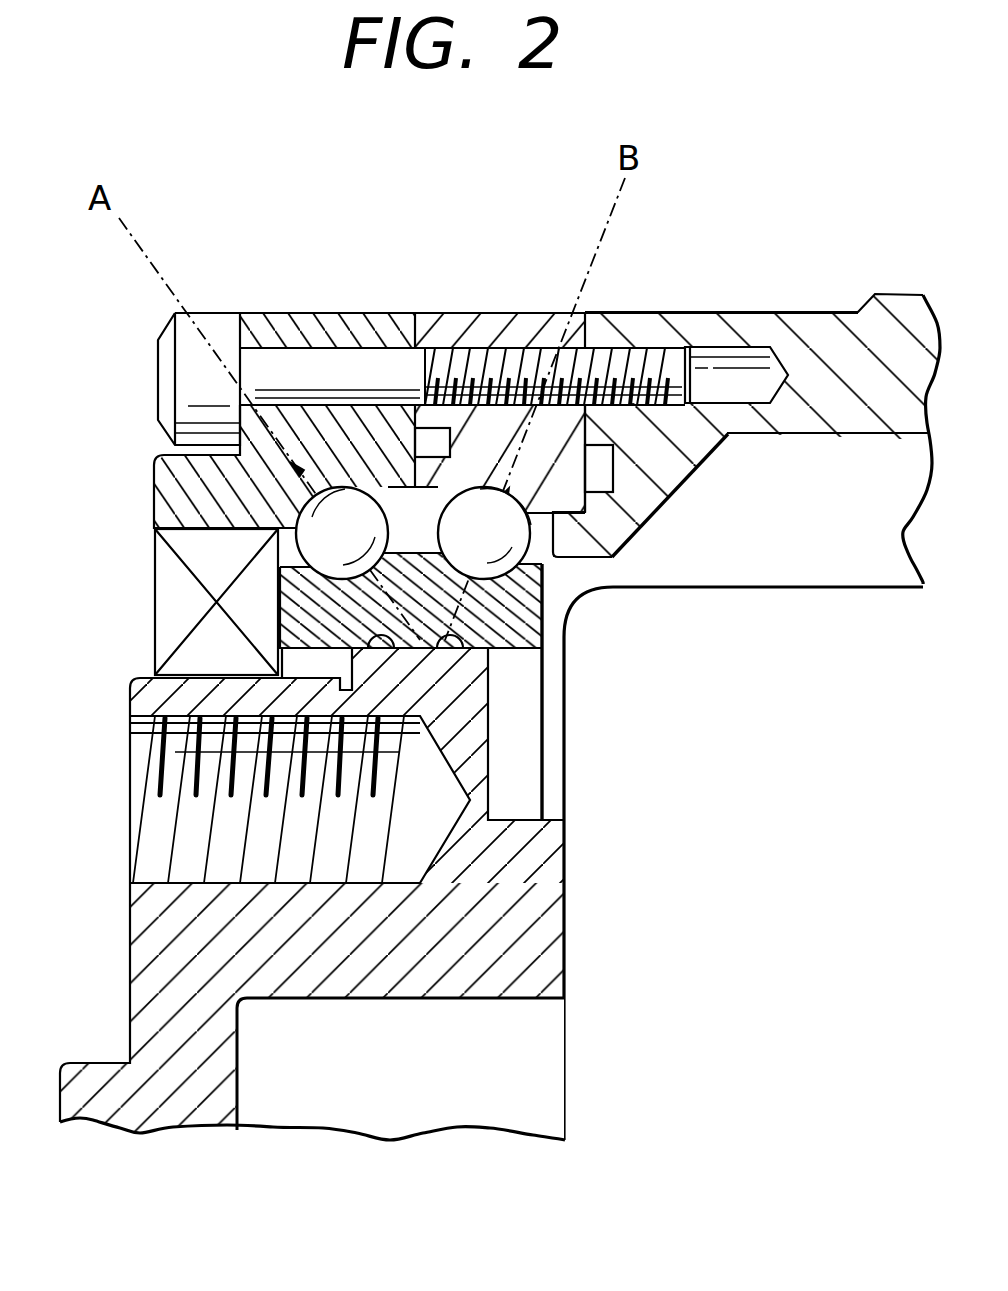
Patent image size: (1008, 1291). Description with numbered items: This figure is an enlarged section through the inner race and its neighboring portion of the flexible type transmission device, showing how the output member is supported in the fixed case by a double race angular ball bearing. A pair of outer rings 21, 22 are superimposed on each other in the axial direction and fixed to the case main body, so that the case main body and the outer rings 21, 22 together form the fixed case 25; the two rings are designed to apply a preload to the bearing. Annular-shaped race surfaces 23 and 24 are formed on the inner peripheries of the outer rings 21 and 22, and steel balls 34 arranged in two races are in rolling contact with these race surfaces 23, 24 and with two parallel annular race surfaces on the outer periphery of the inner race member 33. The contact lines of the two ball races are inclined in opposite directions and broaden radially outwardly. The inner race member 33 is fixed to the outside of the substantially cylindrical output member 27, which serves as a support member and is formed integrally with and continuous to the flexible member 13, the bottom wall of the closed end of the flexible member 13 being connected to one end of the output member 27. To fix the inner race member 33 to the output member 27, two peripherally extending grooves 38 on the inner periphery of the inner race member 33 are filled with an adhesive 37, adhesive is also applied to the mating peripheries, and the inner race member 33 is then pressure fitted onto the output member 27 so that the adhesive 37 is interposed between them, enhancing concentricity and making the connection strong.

The flexible member 13 is at (732, 587).
The outer ring 21 is at (328, 323).
The outer ring 22 is at (690, 332).
The annular-shaped race surface 23 is at (335, 540).
The annular-shaped race surface 24 is at (530, 528).
The fixed case 25 is at (747, 303).
The output member 27 is at (537, 912).
The inner race member 33 is at (297, 613).
The steel ball 34 is at (277, 537).
The adhesive 37 is at (423, 652).
The peripherally extending groove 38 is at (387, 652).